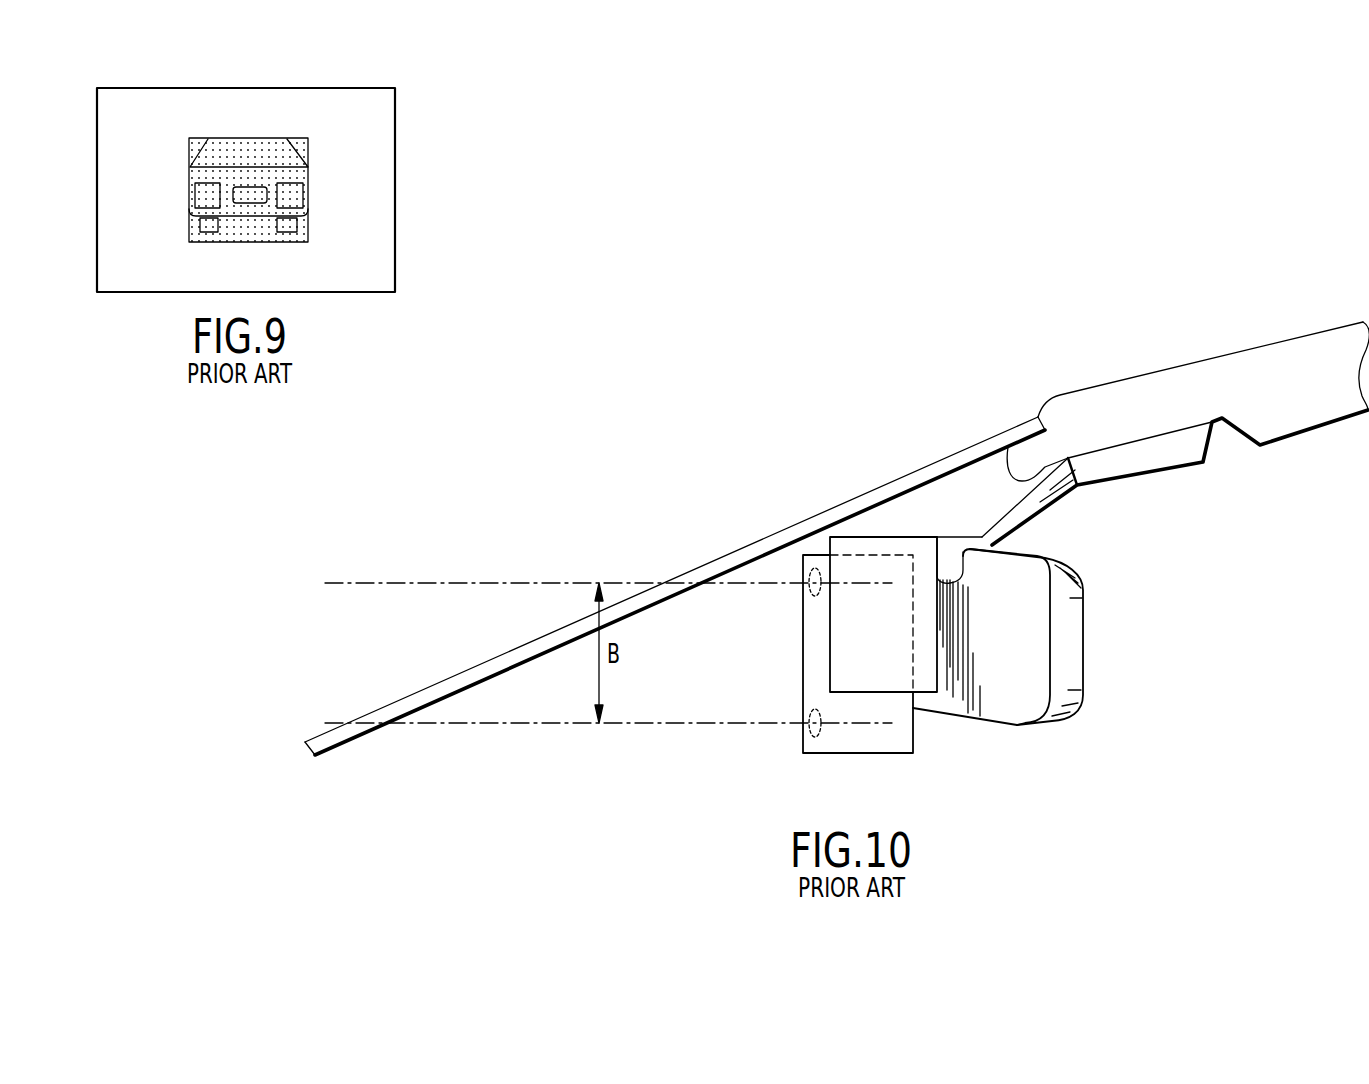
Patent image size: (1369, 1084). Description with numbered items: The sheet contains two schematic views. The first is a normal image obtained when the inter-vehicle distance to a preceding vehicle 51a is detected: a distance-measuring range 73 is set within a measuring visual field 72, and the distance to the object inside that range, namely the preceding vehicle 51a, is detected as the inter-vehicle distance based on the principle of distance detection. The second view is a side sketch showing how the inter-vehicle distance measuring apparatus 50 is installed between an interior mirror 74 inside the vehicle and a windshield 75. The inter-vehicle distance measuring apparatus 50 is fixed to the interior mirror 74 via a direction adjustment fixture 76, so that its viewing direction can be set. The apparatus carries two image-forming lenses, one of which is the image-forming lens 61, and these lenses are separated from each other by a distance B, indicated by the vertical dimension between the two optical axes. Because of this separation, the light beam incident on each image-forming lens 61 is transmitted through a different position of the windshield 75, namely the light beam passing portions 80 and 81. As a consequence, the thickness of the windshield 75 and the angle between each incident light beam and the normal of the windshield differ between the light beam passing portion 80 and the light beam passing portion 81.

In FIG. 9, the preceding vehicle 51a is at (255, 145).
In FIG. 9, the measuring visual field 72 is at (395, 252).
In FIG. 9, the distance-measuring range 73 is at (308, 157).
In FIG. 10, the windshield 75 is at (983, 447).
In FIG. 10, the direction adjustment fixture 76 is at (858, 543).
In FIG. 10, the image-forming lens 61 is at (805, 592).
In FIG. 10, the interior mirror 74 is at (1035, 632).
In FIG. 10, the inter-vehicle distance measuring apparatus 50 is at (865, 743).
In FIG. 10, the light beam passing portion 80 is at (658, 583).
In FIG. 10, the light beam passing portion 81 is at (360, 727).